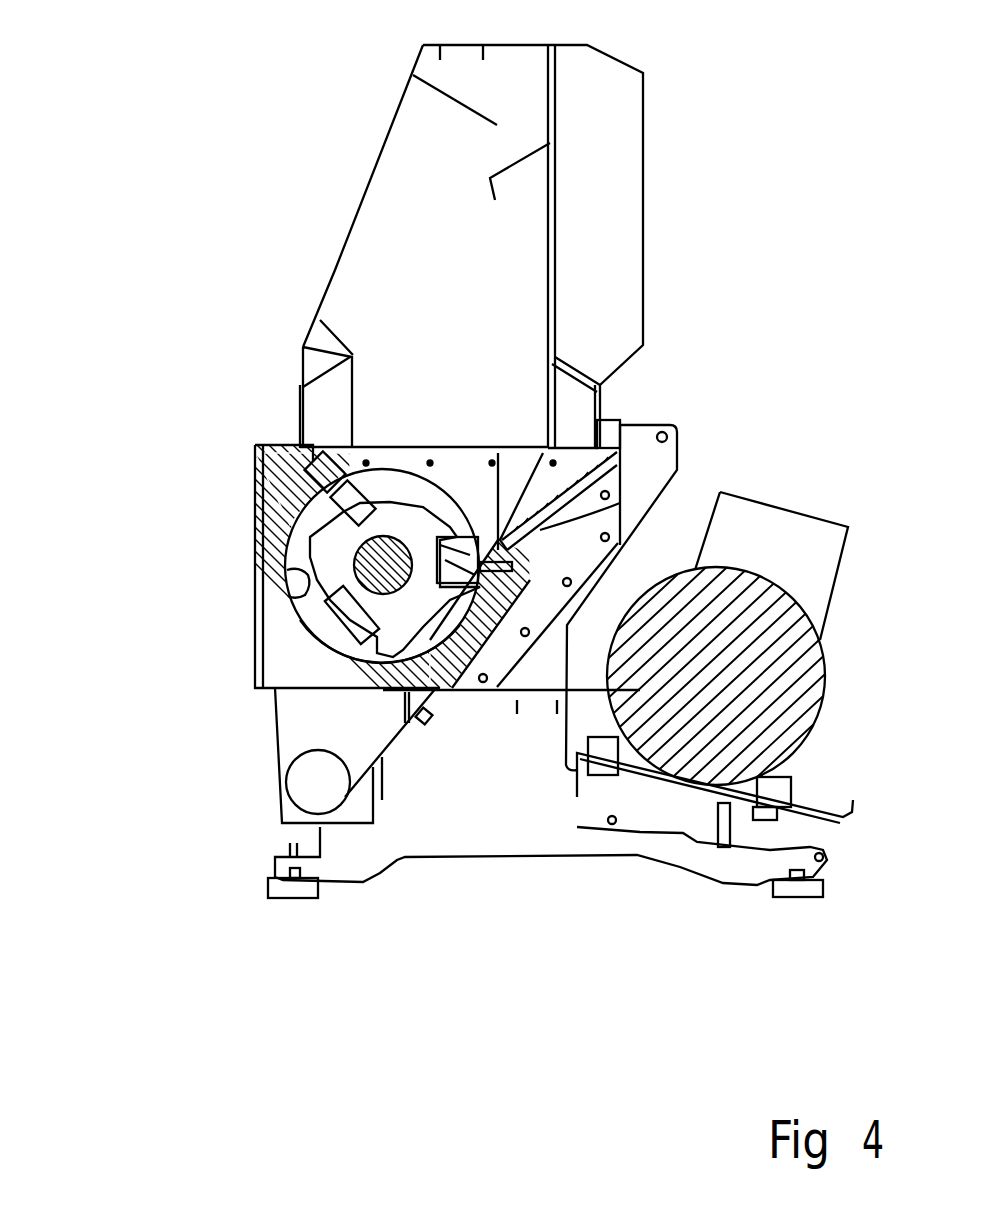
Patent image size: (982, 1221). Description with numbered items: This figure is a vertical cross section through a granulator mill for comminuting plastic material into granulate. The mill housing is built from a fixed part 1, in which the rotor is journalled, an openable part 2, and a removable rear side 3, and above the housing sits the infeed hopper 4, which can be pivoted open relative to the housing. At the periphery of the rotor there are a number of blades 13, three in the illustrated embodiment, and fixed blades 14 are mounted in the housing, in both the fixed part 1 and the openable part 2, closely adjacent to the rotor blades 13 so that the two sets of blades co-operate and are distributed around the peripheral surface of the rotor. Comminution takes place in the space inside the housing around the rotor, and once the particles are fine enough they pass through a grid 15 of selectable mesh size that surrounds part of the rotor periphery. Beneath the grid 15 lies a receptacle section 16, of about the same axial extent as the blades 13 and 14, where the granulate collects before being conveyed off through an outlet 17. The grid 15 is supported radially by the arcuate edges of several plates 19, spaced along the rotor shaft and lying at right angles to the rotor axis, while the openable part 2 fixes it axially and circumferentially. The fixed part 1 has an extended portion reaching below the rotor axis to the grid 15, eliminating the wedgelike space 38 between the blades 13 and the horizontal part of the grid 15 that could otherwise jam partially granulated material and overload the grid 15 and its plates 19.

The fixed part of the mill housing 1 is at (457, 472).
The openable part of the mill housing 2 is at (253, 480).
The removable rear side of the mill housing 3 is at (540, 523).
The infeed hopper 4 is at (622, 158).
The blades 13 is at (297, 550).
The fixed blades 14 is at (503, 517).
The grid 15 is at (287, 600).
The receptacle section 16 is at (305, 715).
The outlet 17 is at (308, 785).
The plates 19 is at (297, 645).
The wedgelike space 38 is at (407, 722).